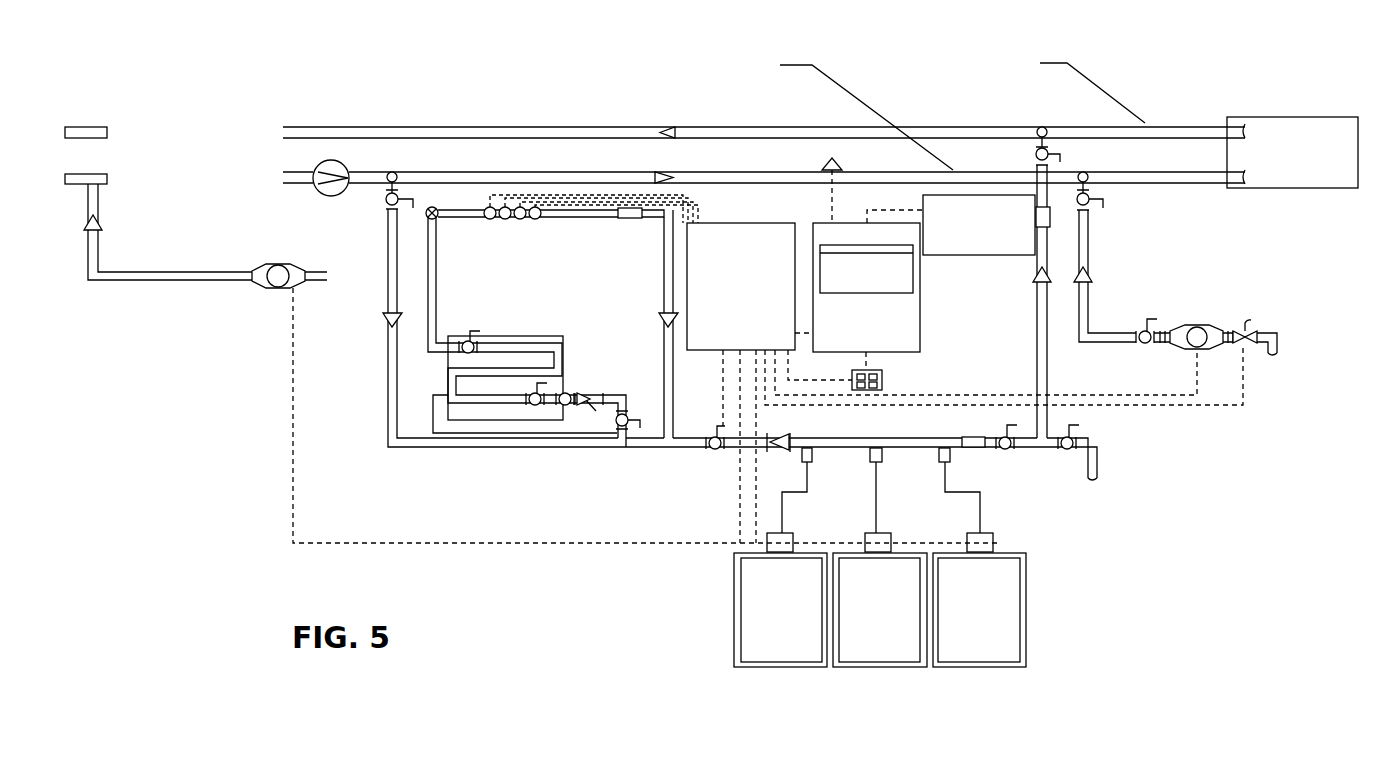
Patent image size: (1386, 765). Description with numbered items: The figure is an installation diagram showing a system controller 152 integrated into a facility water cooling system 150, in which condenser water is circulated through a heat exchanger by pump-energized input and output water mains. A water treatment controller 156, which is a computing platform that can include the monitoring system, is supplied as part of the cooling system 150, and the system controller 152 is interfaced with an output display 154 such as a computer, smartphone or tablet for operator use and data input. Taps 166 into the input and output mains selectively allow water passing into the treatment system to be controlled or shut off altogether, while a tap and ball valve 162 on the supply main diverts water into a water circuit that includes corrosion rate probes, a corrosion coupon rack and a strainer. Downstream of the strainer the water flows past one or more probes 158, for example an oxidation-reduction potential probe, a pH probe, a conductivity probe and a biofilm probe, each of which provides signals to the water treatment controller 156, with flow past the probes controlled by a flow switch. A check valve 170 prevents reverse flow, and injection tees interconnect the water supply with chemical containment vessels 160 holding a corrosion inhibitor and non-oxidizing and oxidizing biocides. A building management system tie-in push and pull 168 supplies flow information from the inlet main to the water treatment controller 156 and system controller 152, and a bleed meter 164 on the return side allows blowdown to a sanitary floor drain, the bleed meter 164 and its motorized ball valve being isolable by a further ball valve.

The water cooling system 150 is at (546, 595).
The system controller 152 is at (922, 356).
The output display 154 is at (917, 293).
The water treatment controller 156 is at (741, 286).
The probes 158 is at (513, 234).
The chemical containment vessels 160 is at (1055, 618).
The tap and ball valve 162 is at (393, 170).
The bleed meter 164 is at (1188, 311).
The taps 166 is at (1098, 191).
The building management system tie-in push and pull 168 is at (830, 156).
The check valve 170 is at (771, 451).